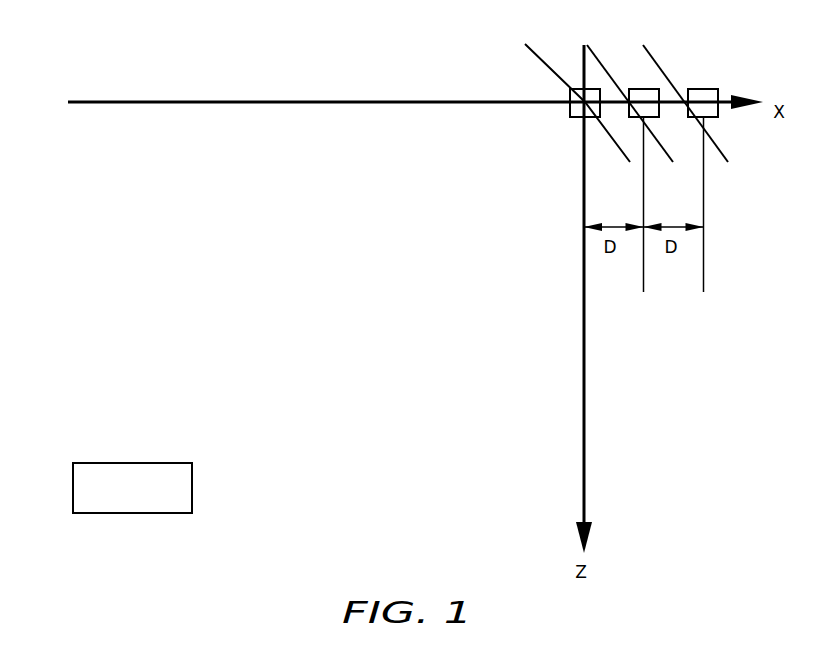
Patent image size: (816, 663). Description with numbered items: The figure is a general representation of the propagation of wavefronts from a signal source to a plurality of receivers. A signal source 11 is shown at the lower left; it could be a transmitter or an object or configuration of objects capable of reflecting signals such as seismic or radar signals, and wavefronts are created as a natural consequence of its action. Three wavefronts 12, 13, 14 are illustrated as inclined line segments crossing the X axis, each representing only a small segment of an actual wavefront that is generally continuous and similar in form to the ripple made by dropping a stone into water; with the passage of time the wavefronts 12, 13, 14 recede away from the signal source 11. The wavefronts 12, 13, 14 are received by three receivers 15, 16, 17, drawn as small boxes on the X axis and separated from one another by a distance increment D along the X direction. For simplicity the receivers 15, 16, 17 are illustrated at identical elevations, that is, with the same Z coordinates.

The signal source 11 is at (193, 488).
The wavefront 12 is at (554, 67).
The wavefront 13 is at (604, 67).
The wavefront 14 is at (671, 67).
The receiver 15 is at (570, 117).
The receiver 16 is at (629, 117).
The receiver 17 is at (688, 117).